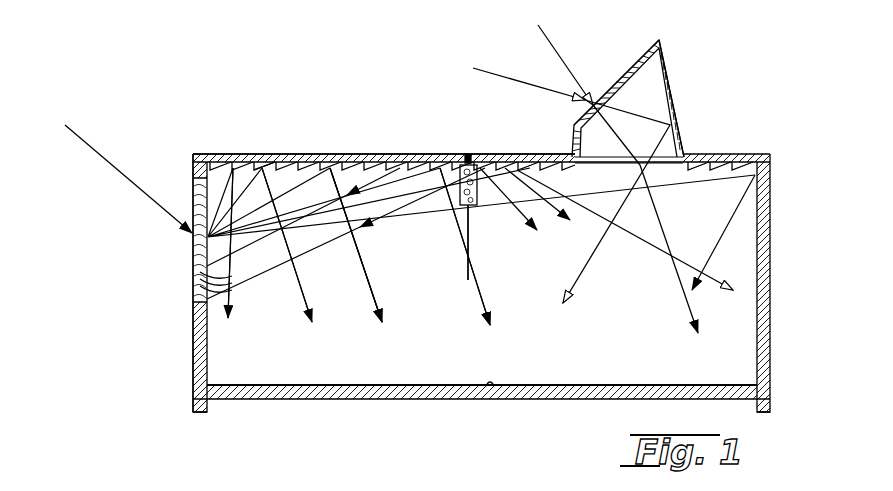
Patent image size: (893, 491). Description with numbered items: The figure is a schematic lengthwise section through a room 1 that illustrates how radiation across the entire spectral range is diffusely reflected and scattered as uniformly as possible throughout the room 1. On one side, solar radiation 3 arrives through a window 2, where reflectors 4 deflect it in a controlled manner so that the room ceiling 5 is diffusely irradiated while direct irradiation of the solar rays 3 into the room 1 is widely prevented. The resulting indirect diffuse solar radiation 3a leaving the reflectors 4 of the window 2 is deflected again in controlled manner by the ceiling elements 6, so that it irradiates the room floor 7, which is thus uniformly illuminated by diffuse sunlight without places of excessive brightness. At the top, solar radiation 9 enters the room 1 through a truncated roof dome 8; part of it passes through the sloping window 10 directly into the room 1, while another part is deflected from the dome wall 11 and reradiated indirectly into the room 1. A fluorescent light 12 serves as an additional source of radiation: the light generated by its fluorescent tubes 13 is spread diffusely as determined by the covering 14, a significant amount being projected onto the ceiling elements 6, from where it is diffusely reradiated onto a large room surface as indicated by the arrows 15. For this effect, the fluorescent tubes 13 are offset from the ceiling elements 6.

The room 1 is at (481, 283).
The window 2 is at (190, 272).
The solar radiation 3 is at (117, 165).
The indirect diffuse solar radiation 3a is at (244, 160).
The reflectors 4 is at (200, 250).
The room ceiling 5 is at (318, 152).
The ceiling elements 6 is at (275, 170).
The room floor 7 is at (491, 400).
The truncated roof dome 8 is at (668, 63).
The solar radiation 9 is at (512, 80).
The sloping window 10 is at (629, 70).
The dome wall 11 is at (664, 100).
The fluorescent light 12 is at (466, 160).
The fluorescent tubes 13 is at (472, 165).
The covering 14 is at (478, 205).
The arrows 15 is at (385, 218).